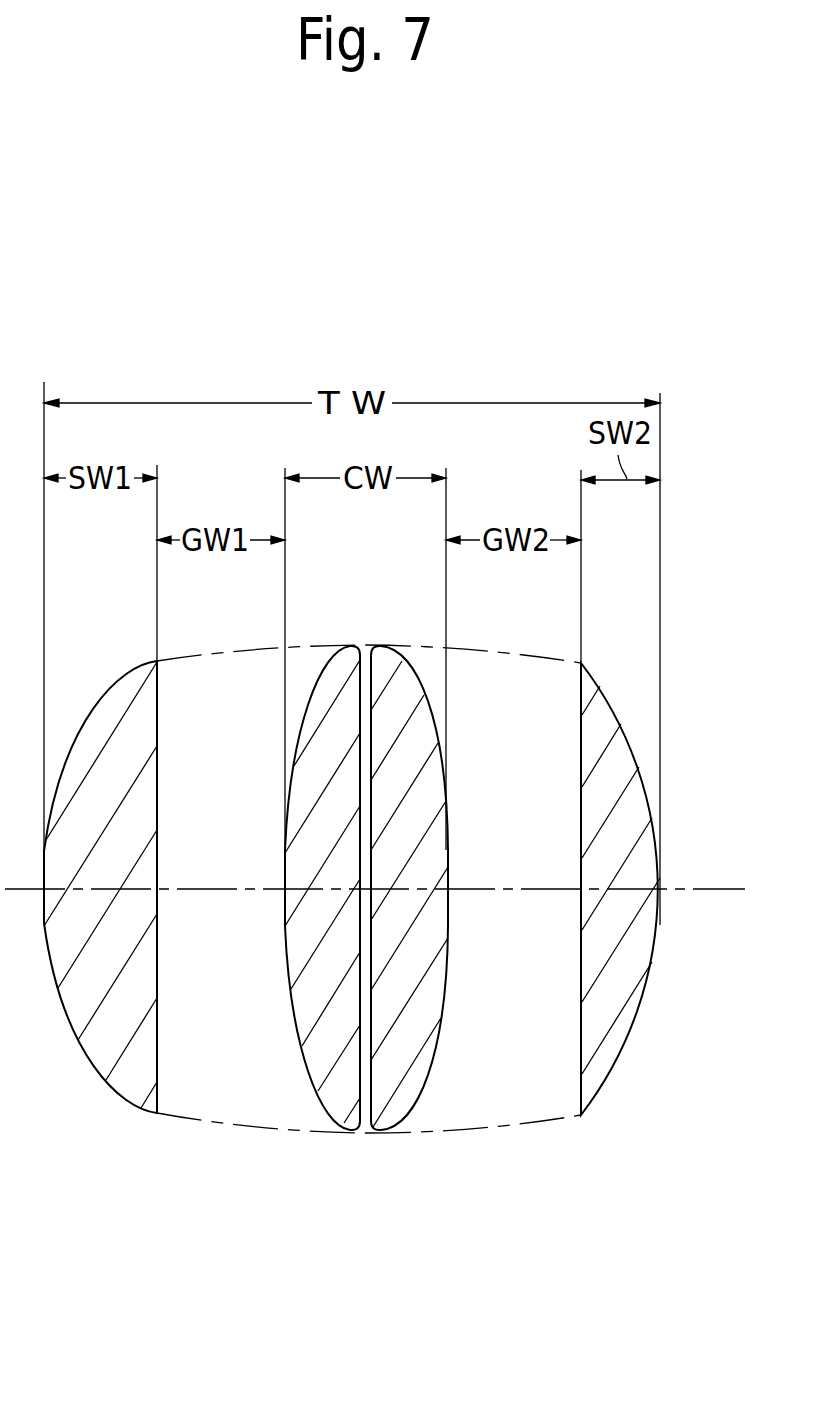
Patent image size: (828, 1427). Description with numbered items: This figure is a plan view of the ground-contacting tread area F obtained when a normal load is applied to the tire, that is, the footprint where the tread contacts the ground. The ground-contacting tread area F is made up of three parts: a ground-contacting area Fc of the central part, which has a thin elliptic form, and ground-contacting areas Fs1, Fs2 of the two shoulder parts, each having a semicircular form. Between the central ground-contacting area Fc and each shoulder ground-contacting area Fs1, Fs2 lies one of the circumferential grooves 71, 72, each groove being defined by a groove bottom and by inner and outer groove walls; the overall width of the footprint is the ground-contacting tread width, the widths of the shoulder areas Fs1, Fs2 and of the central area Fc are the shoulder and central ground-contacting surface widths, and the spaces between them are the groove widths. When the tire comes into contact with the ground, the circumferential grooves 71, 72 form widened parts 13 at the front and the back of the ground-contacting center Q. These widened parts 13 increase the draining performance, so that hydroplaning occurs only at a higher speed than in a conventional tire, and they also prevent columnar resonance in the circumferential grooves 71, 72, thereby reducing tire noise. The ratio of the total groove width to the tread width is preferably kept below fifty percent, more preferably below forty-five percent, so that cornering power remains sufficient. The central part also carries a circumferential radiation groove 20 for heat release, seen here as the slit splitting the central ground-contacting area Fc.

The widened part 13 is at (310, 1085).
The circumferential radiation groove 20 is at (367, 720).
The circumferential groove 71 is at (222, 976).
The circumferential groove 72 is at (516, 976).
The ground-contacting center Q is at (702, 889).
The ground-contacting area of shoulder part Fs1 is at (157, 1055).
The ground-contacting area of central part Fc is at (359, 927).
The ground-contacting area of shoulder part Fs2 is at (581, 1063).
The ground-contacting tread area F is at (352, 961).